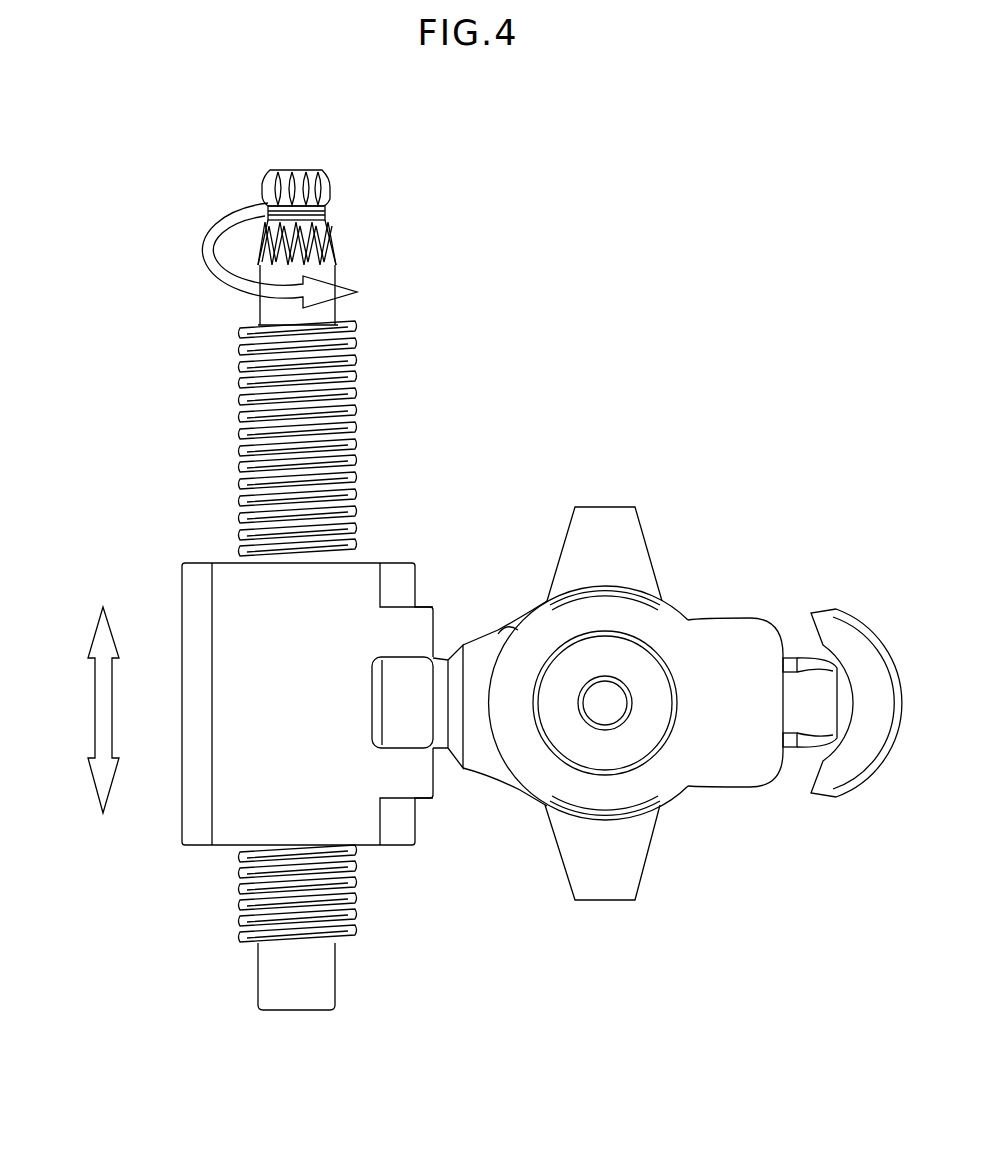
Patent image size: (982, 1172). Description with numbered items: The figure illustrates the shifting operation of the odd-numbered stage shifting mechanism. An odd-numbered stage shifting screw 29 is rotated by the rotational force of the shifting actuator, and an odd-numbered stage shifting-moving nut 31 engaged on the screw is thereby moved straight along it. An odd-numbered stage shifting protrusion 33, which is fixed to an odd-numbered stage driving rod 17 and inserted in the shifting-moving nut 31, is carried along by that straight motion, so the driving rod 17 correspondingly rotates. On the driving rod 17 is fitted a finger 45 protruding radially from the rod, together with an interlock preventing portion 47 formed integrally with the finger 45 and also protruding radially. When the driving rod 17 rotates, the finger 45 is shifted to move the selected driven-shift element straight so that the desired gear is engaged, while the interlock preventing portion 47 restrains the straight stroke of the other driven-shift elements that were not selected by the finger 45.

The odd-numbered stage driving rod 17 is at (645, 683).
The odd-numbered stage shifting screw 29 is at (243, 410).
The odd-numbered stage shifting-moving nut 31 is at (227, 605).
The odd-numbered stage shifting protrusion 33 is at (413, 677).
The finger 45 is at (808, 718).
The interlock preventing portion 47 is at (608, 527).